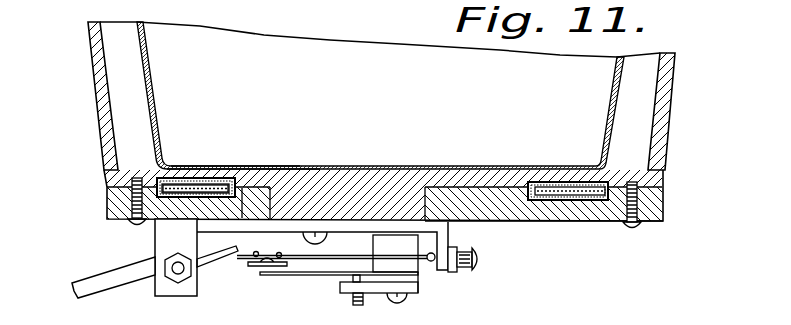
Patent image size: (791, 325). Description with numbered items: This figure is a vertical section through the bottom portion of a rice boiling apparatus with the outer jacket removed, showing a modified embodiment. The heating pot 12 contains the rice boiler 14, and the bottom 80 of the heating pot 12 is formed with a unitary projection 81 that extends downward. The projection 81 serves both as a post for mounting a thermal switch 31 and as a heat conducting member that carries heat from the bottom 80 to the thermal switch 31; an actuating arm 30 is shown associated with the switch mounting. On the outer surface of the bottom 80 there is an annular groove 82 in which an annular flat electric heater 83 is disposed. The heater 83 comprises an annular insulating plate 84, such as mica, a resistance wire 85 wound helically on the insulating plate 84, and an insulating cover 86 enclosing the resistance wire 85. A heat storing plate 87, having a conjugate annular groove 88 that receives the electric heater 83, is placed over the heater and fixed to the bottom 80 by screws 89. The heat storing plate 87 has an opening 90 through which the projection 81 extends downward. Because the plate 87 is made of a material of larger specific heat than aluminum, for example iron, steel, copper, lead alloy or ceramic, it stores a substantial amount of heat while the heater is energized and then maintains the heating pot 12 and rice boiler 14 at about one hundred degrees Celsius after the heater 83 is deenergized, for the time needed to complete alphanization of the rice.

The heating pot 12 is at (93, 97).
The rice boiler 14 is at (153, 93).
The lever arm 30 is at (115, 283).
The thermal switch 31 is at (297, 302).
The bottom 80 is at (508, 186).
The unitary projection 81 is at (448, 222).
The annular groove 82 is at (203, 173).
The annular flat electric heater 83 is at (553, 165).
The annular insulating plate 84 is at (180, 178).
The resistance wire 85 is at (255, 167).
The insulating cover 86 is at (232, 167).
The heat storing plate 87 is at (568, 223).
The conjugate annular groove 88 is at (540, 200).
The screws 89 is at (635, 228).
The opening 90 is at (440, 215).